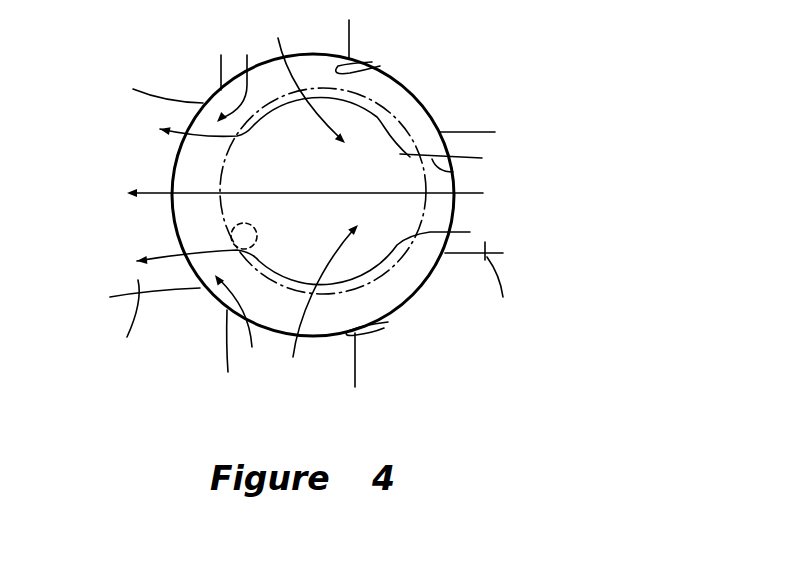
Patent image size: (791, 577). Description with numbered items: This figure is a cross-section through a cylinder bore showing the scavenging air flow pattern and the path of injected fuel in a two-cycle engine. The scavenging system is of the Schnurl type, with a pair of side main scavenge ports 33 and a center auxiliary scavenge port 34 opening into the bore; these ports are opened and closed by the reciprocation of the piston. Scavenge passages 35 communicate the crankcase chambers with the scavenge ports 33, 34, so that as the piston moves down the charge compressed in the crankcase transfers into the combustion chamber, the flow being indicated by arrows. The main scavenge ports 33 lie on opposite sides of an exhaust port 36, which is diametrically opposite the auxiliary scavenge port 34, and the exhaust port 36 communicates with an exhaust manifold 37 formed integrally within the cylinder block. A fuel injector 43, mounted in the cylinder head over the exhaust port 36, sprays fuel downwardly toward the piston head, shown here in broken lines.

The main scavenge port 33 is at (372, 62).
The auxiliary scavenge port 34 is at (456, 172).
The scavenge passage 35 is at (338, 35).
The exhaust port 36 is at (205, 137).
The exhaust manifold 37 is at (290, 305).
The fuel injector 43 is at (257, 224).